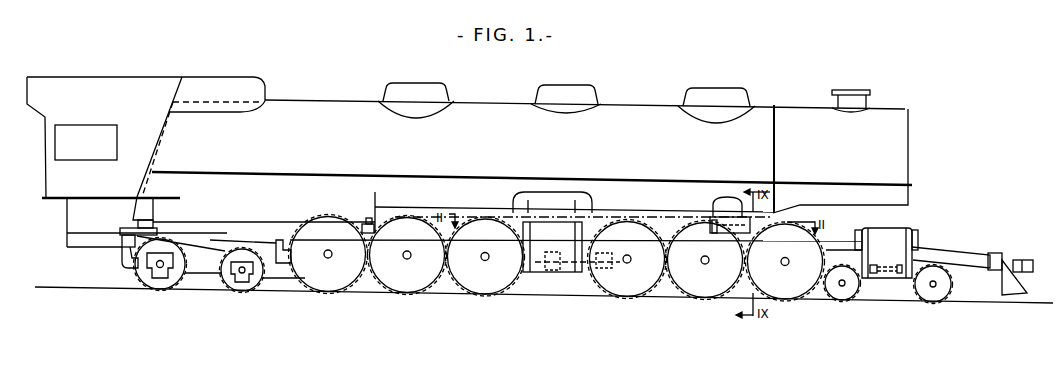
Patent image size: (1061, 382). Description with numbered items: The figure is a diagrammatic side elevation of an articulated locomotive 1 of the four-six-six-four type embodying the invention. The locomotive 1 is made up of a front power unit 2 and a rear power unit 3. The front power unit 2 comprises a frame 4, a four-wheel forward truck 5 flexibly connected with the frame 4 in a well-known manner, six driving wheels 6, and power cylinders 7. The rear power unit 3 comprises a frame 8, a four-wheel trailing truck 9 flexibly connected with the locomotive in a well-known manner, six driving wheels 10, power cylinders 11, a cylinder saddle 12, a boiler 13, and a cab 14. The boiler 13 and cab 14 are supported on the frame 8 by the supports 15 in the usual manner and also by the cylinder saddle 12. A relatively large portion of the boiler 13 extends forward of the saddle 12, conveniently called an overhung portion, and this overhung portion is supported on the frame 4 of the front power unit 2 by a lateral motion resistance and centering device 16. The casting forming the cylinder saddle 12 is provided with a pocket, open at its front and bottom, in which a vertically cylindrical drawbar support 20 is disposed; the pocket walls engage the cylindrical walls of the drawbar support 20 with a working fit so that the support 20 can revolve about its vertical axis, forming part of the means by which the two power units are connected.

The locomotive 1 is at (625, 123).
The front power unit 2 is at (832, 255).
The rear power unit 3 is at (468, 248).
The frame 4 is at (922, 258).
The four-wheel forward truck 5 is at (923, 287).
The driving wheels 6 is at (623, 294).
The power cylinders 7 is at (897, 241).
The frame 8 is at (287, 240).
The four-wheel trailing truck 9 is at (205, 272).
The driving wheels 10 is at (321, 286).
The power cylinders 11 is at (533, 277).
The cylinder saddle 12 is at (583, 204).
The boiler 13 is at (298, 110).
The cab 14 is at (60, 167).
The supports 15 is at (67, 222).
The lateral motion resistance and centering device 16 is at (723, 211).
The drawbar support 20 is at (560, 275).